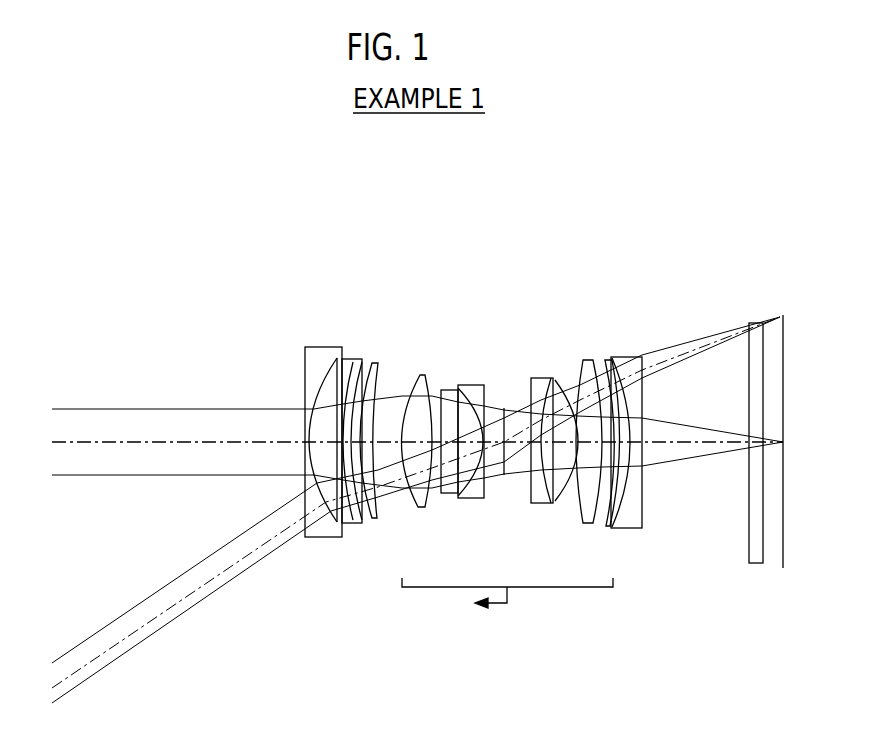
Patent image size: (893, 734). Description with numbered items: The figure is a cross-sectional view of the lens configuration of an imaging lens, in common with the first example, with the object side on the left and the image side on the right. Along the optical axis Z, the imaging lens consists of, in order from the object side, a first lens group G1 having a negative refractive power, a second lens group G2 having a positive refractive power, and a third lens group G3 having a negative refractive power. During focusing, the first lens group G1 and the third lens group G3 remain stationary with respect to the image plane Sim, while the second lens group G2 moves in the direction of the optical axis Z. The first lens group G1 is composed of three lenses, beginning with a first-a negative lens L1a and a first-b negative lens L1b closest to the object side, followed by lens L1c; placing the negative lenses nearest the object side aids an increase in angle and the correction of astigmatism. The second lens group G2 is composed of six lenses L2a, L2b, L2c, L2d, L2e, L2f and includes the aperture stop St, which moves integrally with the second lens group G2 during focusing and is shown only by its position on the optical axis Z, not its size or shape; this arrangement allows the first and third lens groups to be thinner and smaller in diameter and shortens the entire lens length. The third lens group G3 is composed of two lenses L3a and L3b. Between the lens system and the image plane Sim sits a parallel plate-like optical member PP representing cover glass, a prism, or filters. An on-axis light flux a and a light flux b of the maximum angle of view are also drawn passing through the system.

The first lens group G1 is at (390, 183).
The second lens group G2 is at (635, 183).
The third lens group G3 is at (652, 183).
The first-a negative lens L1a is at (323, 350).
The first-b negative lens L1b is at (351, 359).
The lens L1c is at (375, 364).
The lens L2a is at (424, 376).
The lens L2b is at (450, 391).
The lens L2c is at (470, 386).
The aperture stop St is at (505, 408).
The lens L2d is at (540, 379).
The lens L2e is at (559, 381).
The lens L2f is at (586, 362).
The lens L3a is at (612, 360).
The lens L3b is at (632, 358).
The parallel plate-like optical member PP is at (746, 555).
The image plane Sim is at (784, 555).
The optical axis Z is at (95, 435).
The on-axis light flux a is at (41, 404).
The light flux of the maximum angle of view b is at (41, 662).